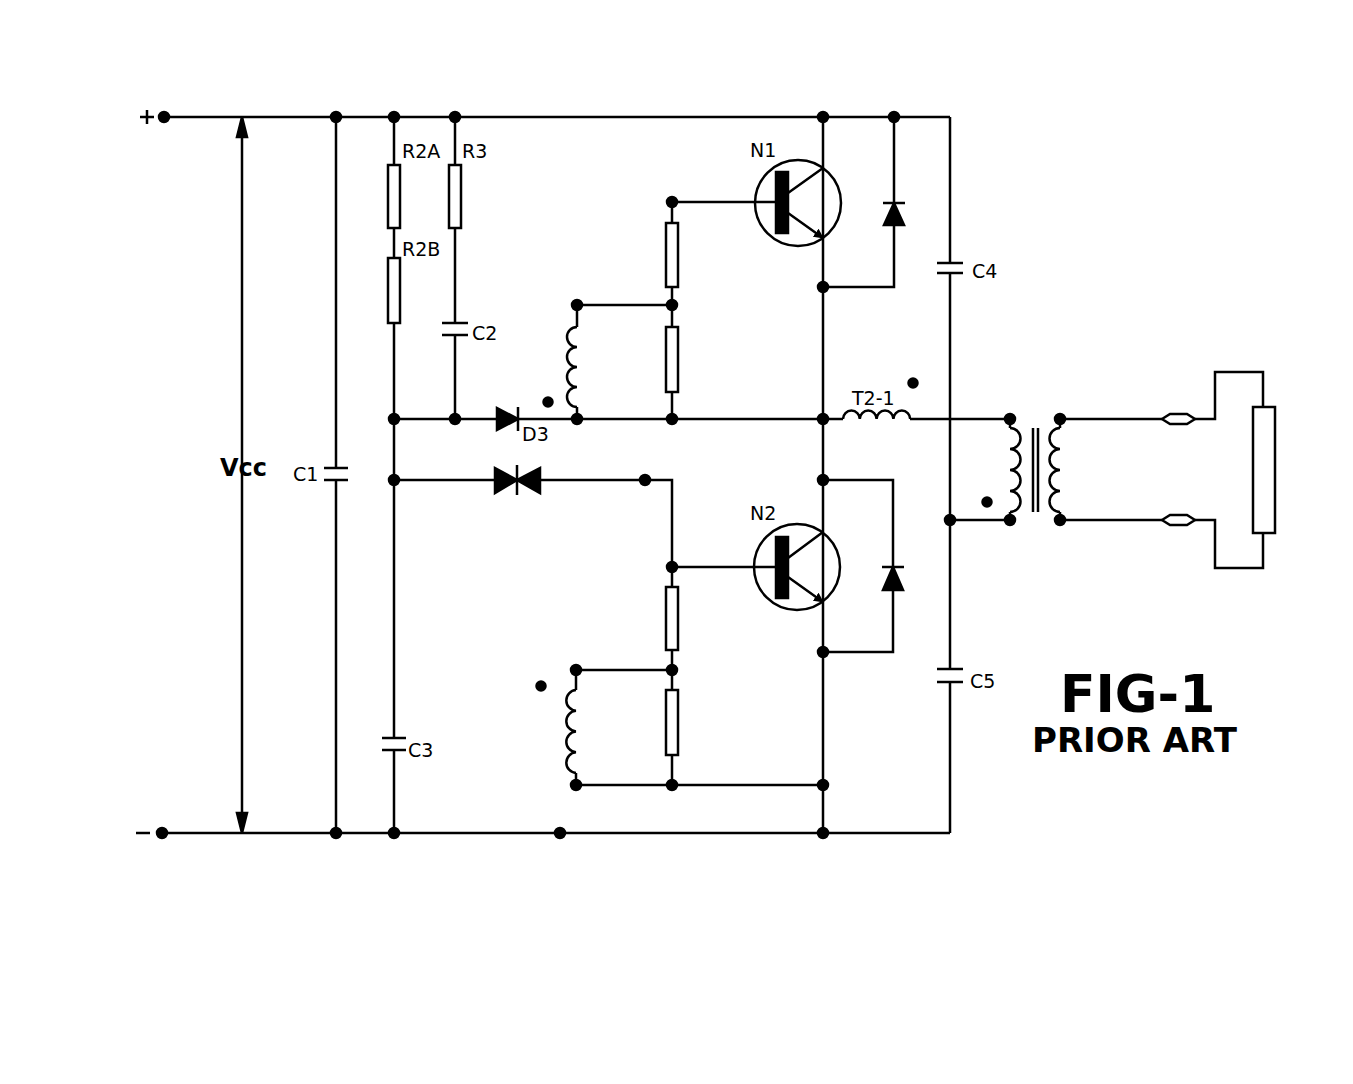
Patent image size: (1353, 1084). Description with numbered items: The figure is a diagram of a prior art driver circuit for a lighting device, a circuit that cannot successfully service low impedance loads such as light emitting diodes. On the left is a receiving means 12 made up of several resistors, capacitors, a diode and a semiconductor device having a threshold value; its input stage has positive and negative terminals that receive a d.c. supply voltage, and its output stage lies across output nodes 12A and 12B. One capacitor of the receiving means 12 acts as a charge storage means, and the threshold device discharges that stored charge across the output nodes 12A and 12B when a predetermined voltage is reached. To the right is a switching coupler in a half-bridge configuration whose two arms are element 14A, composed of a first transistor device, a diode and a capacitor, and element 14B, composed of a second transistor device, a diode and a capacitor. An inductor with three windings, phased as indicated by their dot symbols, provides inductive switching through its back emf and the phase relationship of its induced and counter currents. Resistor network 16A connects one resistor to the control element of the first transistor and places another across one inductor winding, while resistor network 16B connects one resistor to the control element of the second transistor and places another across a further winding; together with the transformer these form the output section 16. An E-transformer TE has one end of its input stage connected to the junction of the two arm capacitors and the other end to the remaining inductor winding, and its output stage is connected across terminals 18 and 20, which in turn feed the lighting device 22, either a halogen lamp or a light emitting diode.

The receiving means 12 is at (508, 197).
The output node 12A is at (647, 478).
The output node 12B is at (562, 838).
The element 14A is at (915, 183).
The element 14B is at (910, 530).
The output section 16 is at (1127, 352).
The resistor network 16A is at (628, 270).
The resistor network 16B is at (632, 633).
The terminal 18 is at (1178, 413).
The terminal 20 is at (1172, 527).
The lighting device 22 is at (1275, 425).
The E-Transformer TE is at (1057, 397).